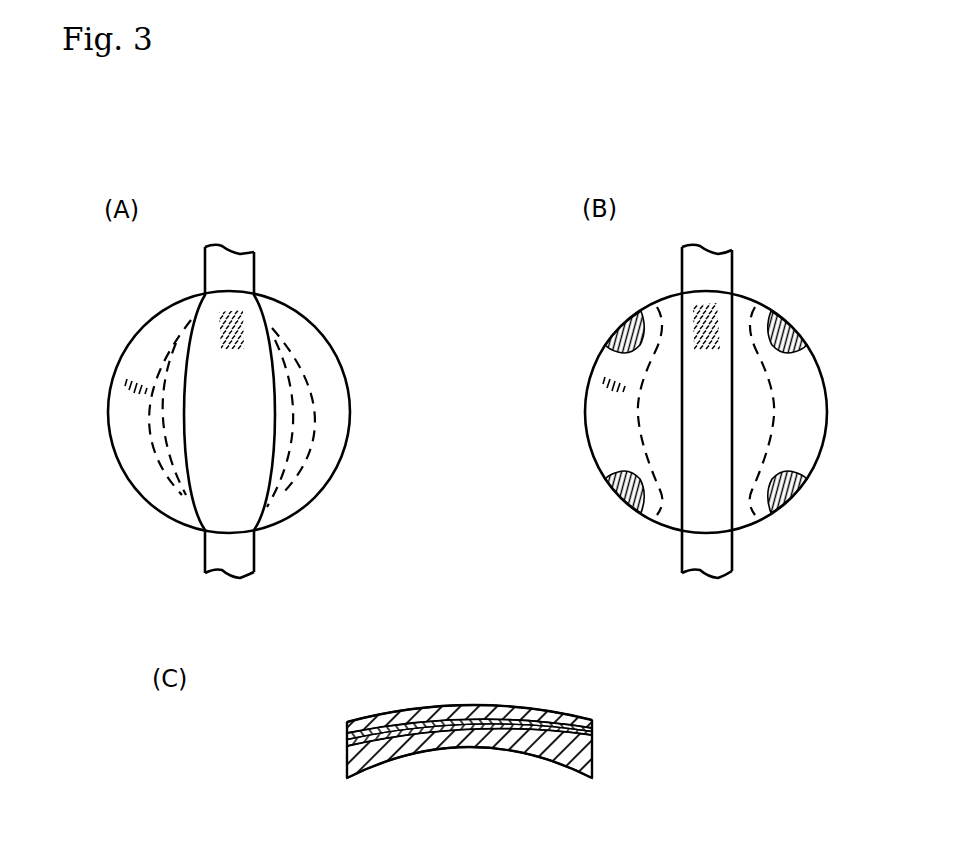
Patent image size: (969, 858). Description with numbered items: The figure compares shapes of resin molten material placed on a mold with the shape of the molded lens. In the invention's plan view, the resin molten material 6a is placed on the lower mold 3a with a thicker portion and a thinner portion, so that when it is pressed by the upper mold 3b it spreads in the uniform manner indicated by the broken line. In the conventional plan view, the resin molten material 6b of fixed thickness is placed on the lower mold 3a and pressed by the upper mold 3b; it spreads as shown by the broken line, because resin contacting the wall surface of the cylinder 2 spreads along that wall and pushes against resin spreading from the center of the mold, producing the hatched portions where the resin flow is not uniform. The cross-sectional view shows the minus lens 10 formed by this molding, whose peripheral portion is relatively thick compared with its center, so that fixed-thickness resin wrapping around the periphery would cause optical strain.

The cylinder 2 is at (588, 443).
The lower mold 3a is at (122, 377).
The upper mold 3b is at (592, 720).
The resin molten material 6a is at (233, 302).
The resin molten material 6b is at (708, 302).
The minus lens 10 is at (345, 747).